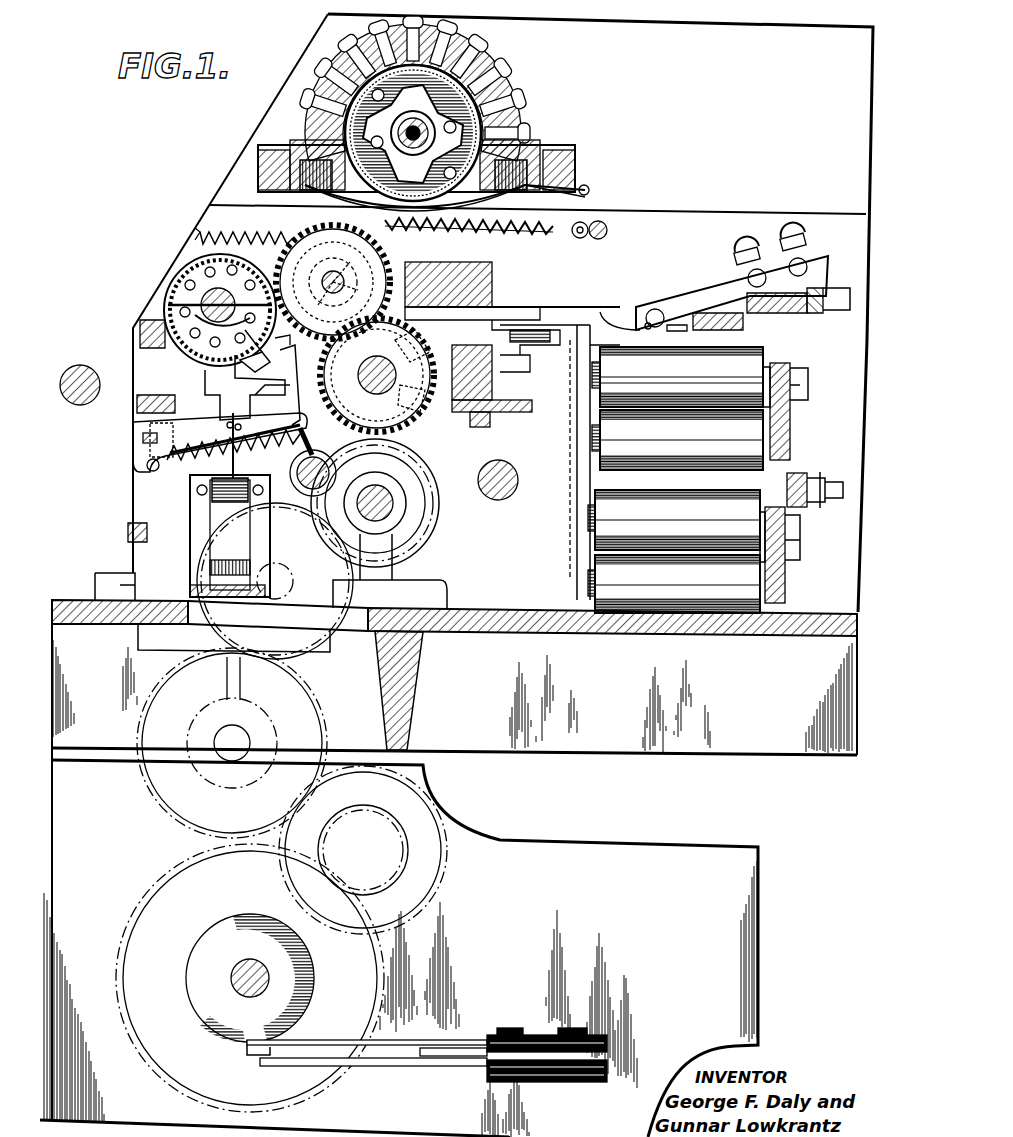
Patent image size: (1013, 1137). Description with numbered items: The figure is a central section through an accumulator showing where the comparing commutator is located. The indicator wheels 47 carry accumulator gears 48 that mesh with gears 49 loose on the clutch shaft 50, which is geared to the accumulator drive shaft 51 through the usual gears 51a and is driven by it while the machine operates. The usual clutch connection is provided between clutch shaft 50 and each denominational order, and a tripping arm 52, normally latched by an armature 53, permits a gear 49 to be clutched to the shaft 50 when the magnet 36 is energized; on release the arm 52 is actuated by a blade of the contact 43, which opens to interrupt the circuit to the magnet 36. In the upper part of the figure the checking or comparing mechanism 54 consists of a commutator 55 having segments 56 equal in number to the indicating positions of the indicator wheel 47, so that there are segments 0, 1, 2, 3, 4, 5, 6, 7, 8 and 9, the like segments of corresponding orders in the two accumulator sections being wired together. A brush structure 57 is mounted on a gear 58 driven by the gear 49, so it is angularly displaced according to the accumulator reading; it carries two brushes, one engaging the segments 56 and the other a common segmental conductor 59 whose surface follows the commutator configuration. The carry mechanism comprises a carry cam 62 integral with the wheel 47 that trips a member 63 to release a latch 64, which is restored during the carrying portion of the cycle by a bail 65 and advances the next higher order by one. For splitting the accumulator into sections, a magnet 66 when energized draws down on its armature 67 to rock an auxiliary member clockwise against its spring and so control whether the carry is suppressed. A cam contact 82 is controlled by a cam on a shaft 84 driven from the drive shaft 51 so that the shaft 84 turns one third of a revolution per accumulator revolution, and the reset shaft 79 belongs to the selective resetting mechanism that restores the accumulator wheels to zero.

The 0 segment 0 is at (516, 133).
The 1 segment 1 is at (508, 103).
The 2 segment 2 is at (493, 76).
The contact screw 3 is at (471, 54).
The contact screw 4 is at (444, 36).
The contact screw 5 is at (413, 30).
The contact screw 6 is at (383, 34).
The contact screw 7 is at (356, 51).
The contact screw 8 is at (333, 72).
The contact screw 9 is at (316, 100).
The magnet 36 is at (715, 480).
The contact 43 is at (632, 312).
The indicator wheel 47 is at (205, 270).
The accumulator gear 48 is at (190, 278).
The gear 49 is at (300, 224).
The clutch shaft 50 is at (345, 285).
The accumulator drive shaft 51 is at (380, 502).
The gears 51a is at (377, 375).
The tripping arm 52 is at (500, 307).
The armature 53 is at (570, 385).
The checking or comparing mechanism 54 is at (780, 120).
The commutator 55 is at (505, 105).
The segments 56 is at (497, 50).
The brush structure 57 is at (465, 123).
The gear 58 is at (480, 232).
The common segmental conductor 59 is at (485, 183).
The carry cam 62 is at (195, 345).
The member 63 is at (280, 443).
The latch 64 is at (245, 420).
The bail 65 is at (215, 383).
The magnet 66 is at (235, 515).
The armature 67 is at (222, 490).
The reset shaft 79 is at (82, 405).
The cam contact 82 is at (292, 1050).
The shaft 84 is at (248, 965).